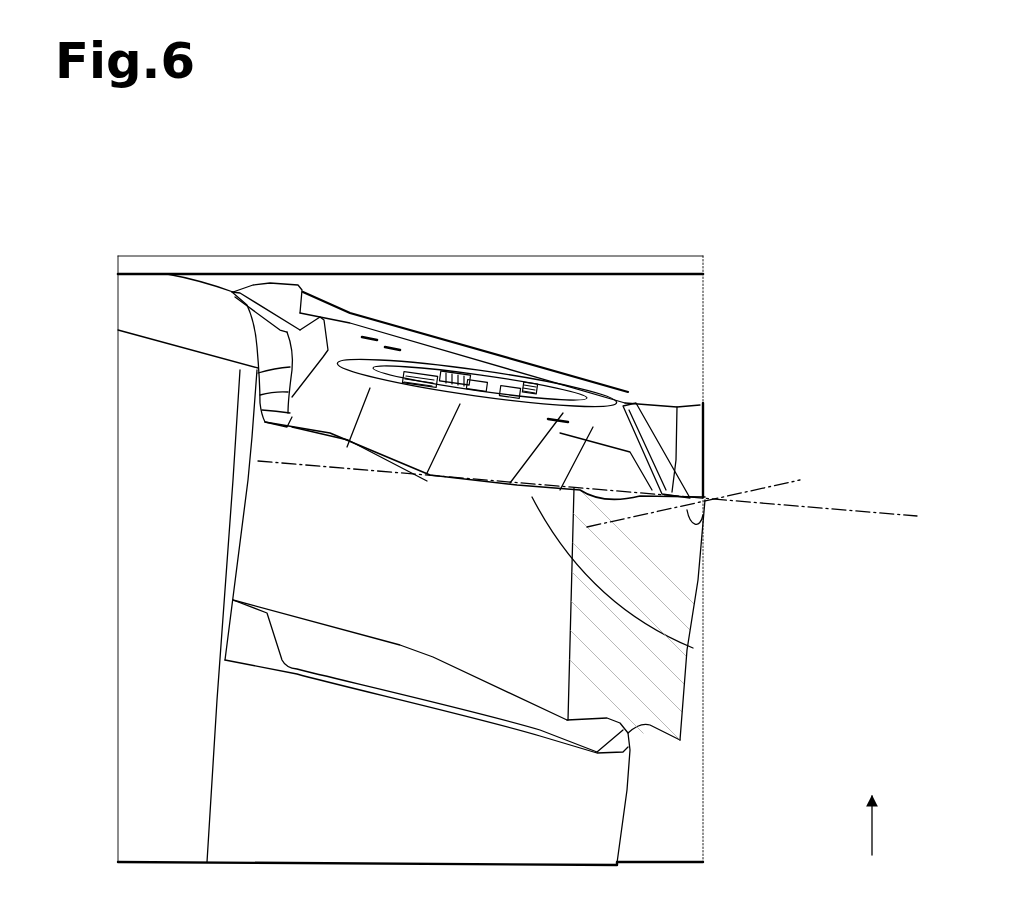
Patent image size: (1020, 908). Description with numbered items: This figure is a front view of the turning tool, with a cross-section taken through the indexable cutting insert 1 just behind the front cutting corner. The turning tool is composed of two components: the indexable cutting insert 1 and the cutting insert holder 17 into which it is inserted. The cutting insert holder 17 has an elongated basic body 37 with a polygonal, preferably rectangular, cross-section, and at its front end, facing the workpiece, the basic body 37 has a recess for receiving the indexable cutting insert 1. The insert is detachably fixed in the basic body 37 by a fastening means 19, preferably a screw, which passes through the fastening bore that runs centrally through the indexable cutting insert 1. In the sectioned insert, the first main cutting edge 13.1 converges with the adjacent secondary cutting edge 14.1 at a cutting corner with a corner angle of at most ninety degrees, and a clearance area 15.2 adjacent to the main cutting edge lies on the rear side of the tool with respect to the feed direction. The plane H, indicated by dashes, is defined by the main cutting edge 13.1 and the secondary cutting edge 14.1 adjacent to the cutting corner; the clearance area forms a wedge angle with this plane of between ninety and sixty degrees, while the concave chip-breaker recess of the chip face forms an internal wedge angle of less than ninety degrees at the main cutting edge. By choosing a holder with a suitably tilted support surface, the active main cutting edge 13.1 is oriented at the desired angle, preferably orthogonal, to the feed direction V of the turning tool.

The indexable cutting insert 1 is at (472, 312).
The cutting insert holder 17 is at (183, 218).
The fastening means 19 is at (485, 387).
The secondary cutting edge 14.1 is at (510, 480).
The first main cutting edge 13.1 is at (708, 500).
The clearance area 15.2 is at (313, 557).
The basic body 37 is at (245, 767).
The plane H is at (808, 507).
The feed direction V is at (872, 828).